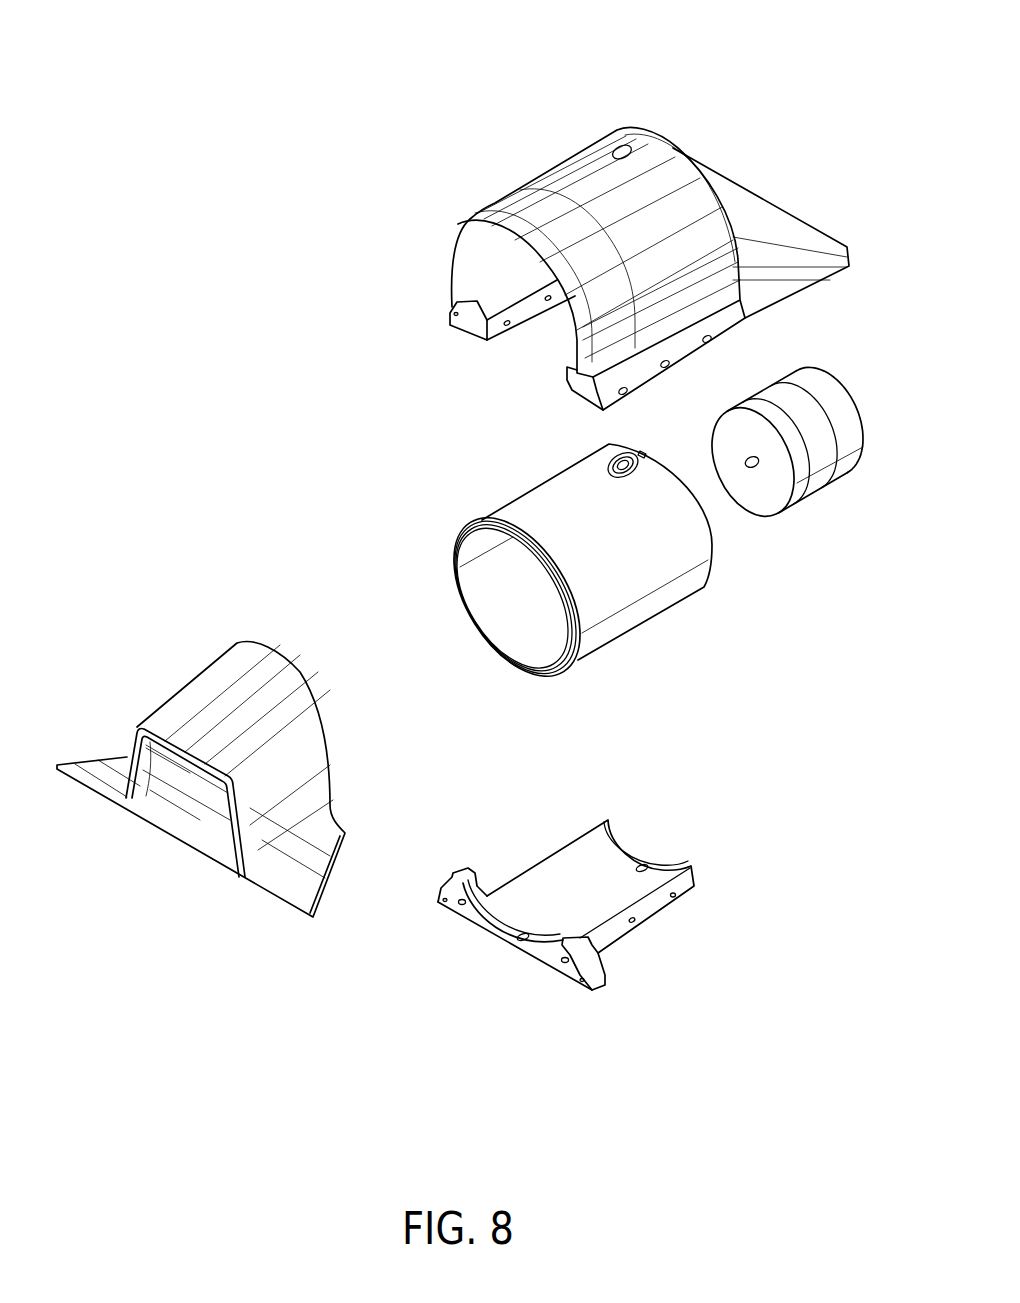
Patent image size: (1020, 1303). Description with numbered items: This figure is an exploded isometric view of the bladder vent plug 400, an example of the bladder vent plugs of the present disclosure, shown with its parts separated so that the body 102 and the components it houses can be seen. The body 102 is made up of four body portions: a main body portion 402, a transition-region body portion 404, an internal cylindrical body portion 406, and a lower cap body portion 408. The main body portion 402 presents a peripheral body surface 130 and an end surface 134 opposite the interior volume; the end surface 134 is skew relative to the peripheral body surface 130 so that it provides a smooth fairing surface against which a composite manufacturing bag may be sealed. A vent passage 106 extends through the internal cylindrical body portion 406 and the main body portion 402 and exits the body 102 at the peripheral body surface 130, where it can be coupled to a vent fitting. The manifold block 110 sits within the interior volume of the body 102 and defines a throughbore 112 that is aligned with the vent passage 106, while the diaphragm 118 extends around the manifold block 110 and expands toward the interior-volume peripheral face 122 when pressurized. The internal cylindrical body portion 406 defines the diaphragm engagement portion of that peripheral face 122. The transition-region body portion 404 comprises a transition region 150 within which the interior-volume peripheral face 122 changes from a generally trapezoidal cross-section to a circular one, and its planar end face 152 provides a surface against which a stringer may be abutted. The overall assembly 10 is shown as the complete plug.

The system 10 is at (158, 88).
The bladder vent plug 400 is at (184, 150).
The body 102 is at (446, 172).
The main body portion 402 is at (544, 163).
The transition-region body portion 404 is at (171, 692).
The internal cylindrical body portion 406 is at (517, 486).
The lower cap body portion 408 is at (552, 852).
The vent passage 106 is at (622, 148).
The manifold block 110 is at (822, 366).
The throughbore 112 is at (751, 463).
The diaphragm 118 is at (823, 490).
The interior-volume peripheral face 122 is at (521, 631).
The peripheral body surface 130 is at (650, 212).
The end surface 134 is at (773, 207).
The transition region 150 is at (188, 813).
The end face 152 is at (167, 752).